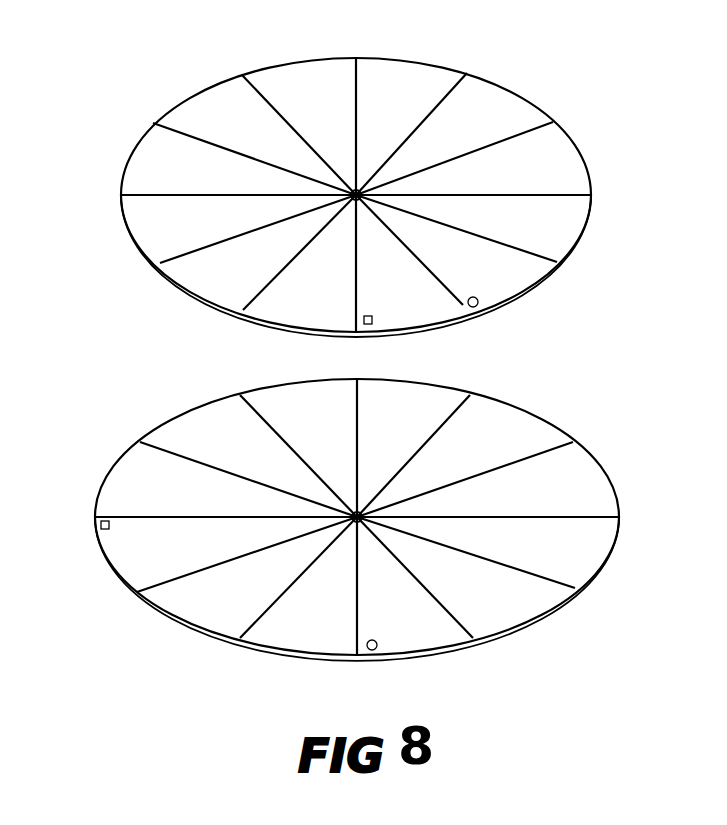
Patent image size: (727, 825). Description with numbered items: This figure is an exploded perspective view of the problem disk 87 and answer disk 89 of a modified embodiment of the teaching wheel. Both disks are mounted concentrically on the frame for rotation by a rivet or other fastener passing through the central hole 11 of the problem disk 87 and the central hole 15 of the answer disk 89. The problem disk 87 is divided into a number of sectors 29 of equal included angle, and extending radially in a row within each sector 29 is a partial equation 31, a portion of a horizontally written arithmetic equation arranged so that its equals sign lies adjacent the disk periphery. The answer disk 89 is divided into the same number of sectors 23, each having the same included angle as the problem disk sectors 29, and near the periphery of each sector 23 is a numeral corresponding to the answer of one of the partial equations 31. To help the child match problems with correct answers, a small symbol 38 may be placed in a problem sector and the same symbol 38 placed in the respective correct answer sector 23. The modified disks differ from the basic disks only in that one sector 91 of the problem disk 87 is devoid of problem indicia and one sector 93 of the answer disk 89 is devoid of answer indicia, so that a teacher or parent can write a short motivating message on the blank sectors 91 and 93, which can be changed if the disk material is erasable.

The hole 11 is at (358, 192).
The hole 15 is at (360, 514).
The sector 23 is at (298, 445).
The sector 29 is at (234, 191).
The partial equation 31 is at (320, 77).
The symbol 38 is at (364, 324).
The problem disk 87 is at (380, 174).
The answer disk 89 is at (365, 508).
The blank sector 91 is at (558, 243).
The blank sector 93 is at (433, 400).